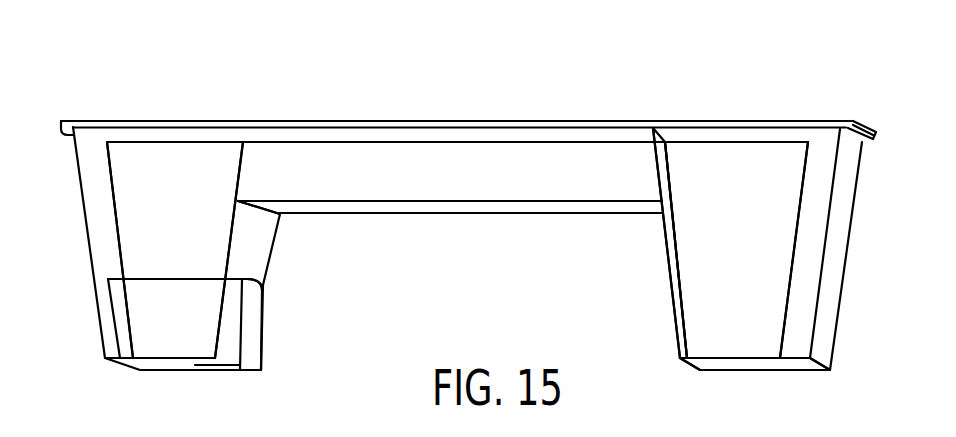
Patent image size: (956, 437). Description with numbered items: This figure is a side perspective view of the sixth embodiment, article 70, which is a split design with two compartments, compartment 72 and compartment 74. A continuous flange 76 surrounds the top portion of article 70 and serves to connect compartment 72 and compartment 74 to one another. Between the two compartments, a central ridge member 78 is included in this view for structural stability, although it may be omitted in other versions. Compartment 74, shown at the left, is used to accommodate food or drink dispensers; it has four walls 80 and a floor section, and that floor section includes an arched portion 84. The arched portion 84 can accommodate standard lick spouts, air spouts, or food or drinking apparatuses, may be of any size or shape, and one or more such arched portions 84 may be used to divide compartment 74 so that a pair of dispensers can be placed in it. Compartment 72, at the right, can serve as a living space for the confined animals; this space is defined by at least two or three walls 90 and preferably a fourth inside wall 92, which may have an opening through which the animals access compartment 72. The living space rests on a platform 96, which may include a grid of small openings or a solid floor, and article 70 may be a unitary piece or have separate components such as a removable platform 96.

The article 70 is at (626, 52).
The compartment 72 is at (812, 268).
The compartment 74 is at (113, 203).
The continuous flange 76 is at (455, 119).
The central ridge member 78 is at (443, 187).
The walls 80 is at (262, 232).
The arched portion 84 is at (248, 318).
The walls 90 is at (738, 157).
The fourth inside wall 92 is at (681, 274).
The platform 96 is at (767, 372).